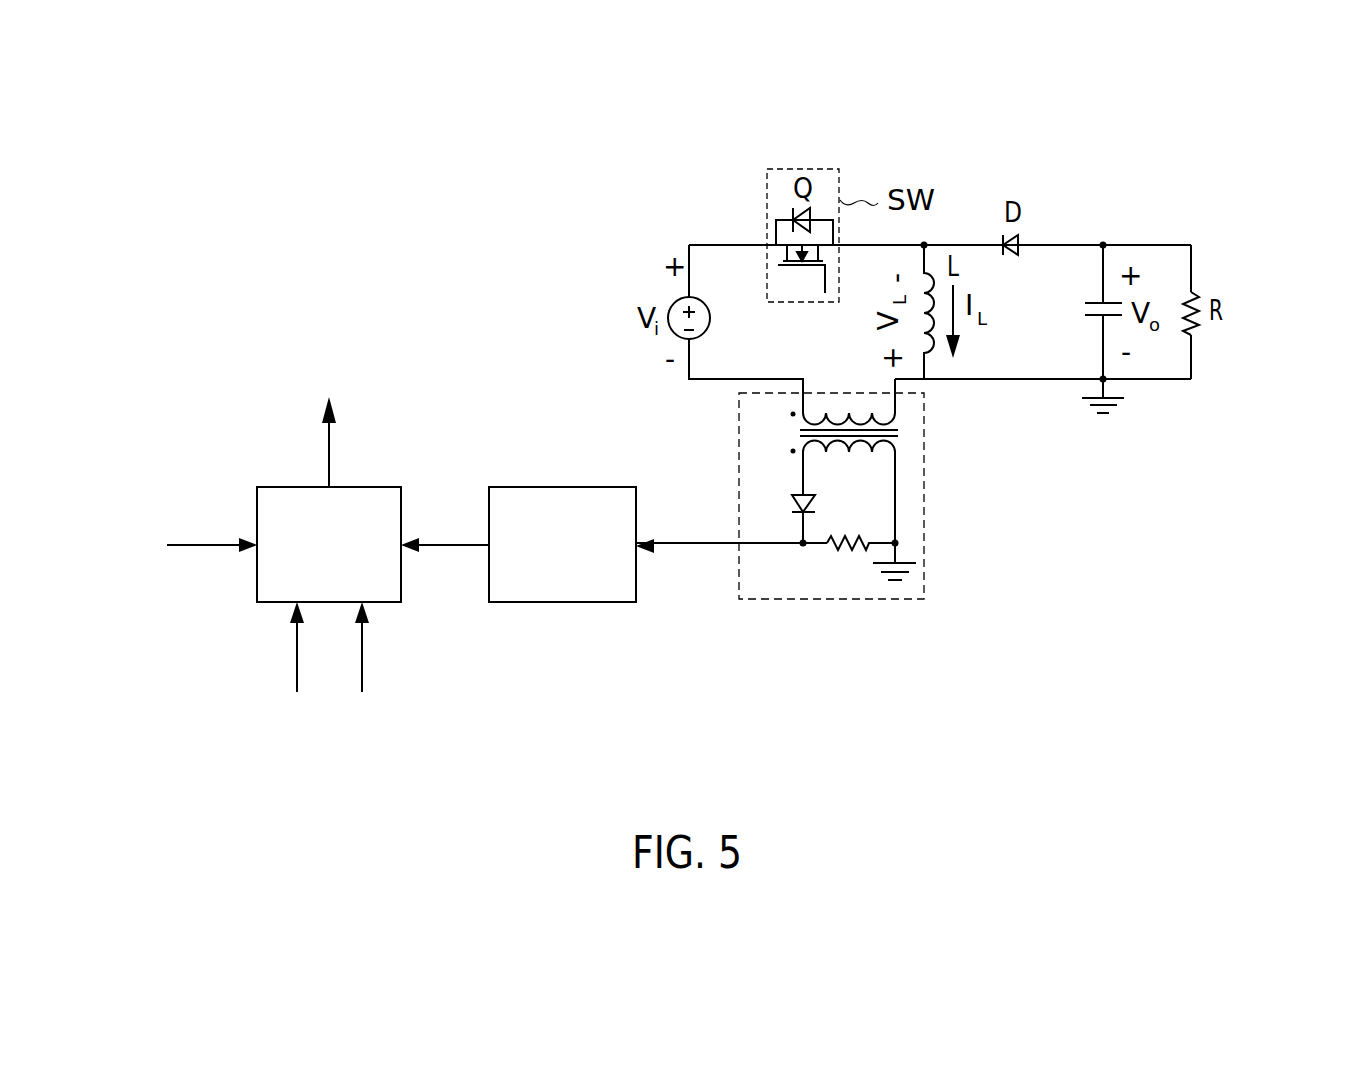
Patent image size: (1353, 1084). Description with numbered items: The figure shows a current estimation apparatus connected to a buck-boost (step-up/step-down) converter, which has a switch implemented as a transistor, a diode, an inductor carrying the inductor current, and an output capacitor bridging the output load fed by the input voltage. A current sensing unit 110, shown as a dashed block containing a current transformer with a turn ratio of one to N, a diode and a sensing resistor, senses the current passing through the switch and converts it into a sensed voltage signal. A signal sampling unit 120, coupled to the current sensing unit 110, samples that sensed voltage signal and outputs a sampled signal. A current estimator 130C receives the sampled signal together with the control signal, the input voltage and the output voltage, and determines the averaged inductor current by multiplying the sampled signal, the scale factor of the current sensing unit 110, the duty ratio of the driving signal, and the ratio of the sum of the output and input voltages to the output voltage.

The current sensing unit 110 is at (924, 532).
The signal sampling unit 120 is at (560, 603).
The current estimator 130C is at (367, 487).